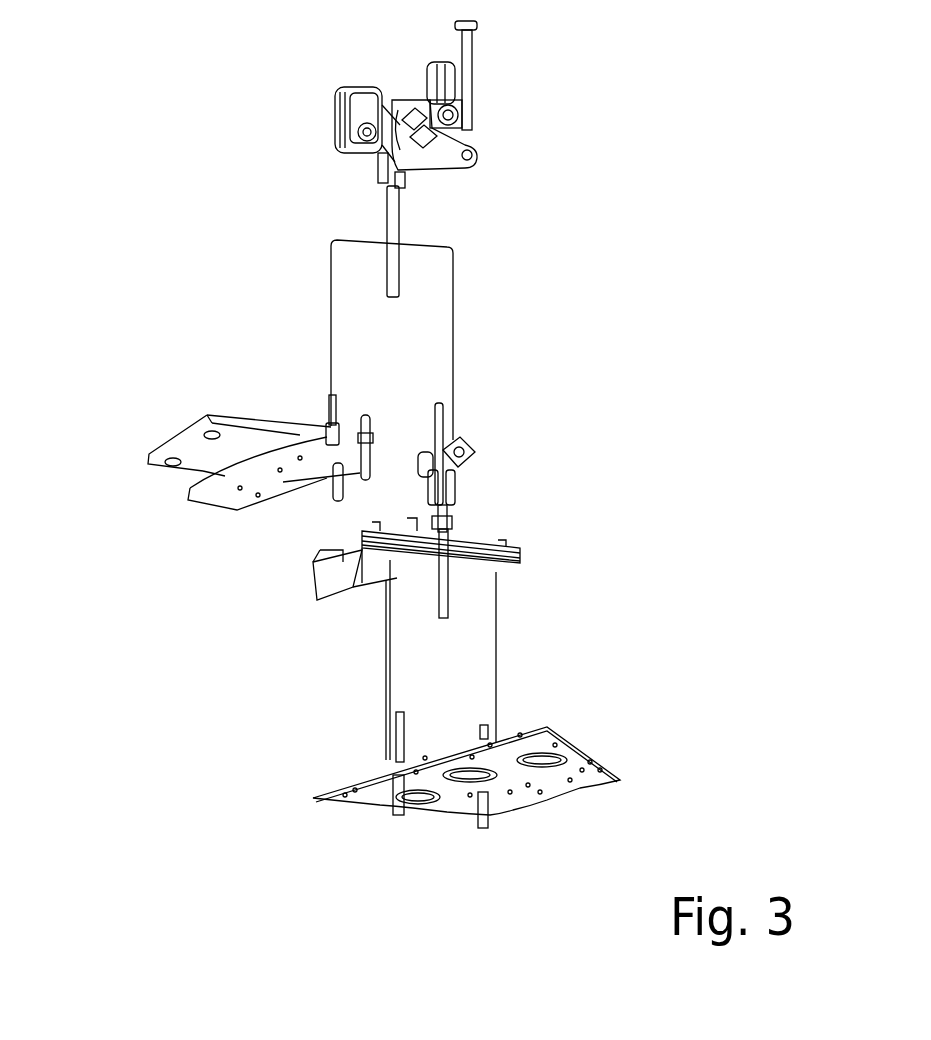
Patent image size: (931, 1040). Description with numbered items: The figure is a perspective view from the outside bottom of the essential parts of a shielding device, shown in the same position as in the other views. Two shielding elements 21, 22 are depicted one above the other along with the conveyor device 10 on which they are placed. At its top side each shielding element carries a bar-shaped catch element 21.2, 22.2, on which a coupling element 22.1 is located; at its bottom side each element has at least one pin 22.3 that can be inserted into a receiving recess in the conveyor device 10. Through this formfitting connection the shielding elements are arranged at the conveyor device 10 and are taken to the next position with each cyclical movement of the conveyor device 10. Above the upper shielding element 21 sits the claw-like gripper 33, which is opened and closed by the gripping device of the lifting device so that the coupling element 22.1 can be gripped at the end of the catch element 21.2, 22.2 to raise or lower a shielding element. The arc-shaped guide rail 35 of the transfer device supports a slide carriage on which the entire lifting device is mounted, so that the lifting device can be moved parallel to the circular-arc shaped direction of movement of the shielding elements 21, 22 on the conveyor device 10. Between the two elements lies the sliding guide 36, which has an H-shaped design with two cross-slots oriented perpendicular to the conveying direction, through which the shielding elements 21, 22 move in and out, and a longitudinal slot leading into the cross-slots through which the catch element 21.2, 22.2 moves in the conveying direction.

The conveyor device 10 is at (372, 797).
The shielding element 21 is at (360, 348).
The catch element 21.2 is at (387, 220).
The shielding element 22 is at (453, 675).
The coupling element 22.1 is at (472, 462).
The catch element 22.2 is at (450, 521).
The pin 22.3 is at (483, 828).
The claw-like gripper 33 is at (340, 145).
The guide rail 35 is at (190, 500).
The sliding guide 36 is at (517, 565).